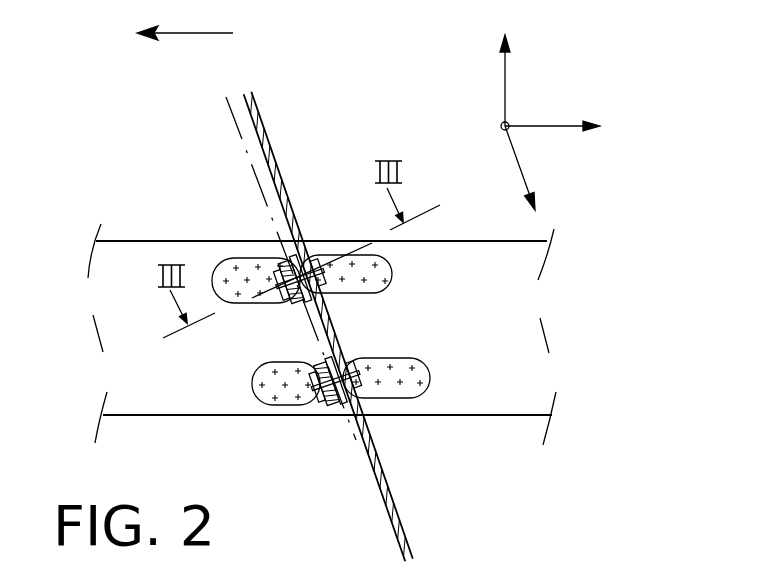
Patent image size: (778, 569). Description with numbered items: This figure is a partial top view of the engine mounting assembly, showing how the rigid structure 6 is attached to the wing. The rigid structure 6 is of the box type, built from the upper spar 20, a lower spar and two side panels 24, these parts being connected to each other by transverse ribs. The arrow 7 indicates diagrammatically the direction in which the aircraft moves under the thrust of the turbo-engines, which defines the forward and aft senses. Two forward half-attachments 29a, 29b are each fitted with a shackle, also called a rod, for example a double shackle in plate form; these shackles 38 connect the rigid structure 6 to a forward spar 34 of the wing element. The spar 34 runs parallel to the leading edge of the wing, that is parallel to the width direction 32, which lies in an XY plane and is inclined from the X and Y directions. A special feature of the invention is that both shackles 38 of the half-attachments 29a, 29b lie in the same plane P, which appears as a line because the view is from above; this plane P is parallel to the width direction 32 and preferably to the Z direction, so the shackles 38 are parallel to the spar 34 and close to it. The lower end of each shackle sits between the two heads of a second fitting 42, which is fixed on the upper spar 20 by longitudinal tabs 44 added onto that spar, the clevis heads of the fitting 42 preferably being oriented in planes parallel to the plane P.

The rigid structure 6 is at (524, 291).
The arrow 7 is at (188, 33).
The upper spar 20 is at (354, 345).
The side panels 24 is at (452, 241).
The forward half-attachment 29a is at (320, 282).
The forward half-attachment 29b is at (289, 419).
The width direction 32 is at (520, 164).
The forward spar 34 is at (266, 134).
The shackles 38 is at (298, 300).
The second fitting 42 is at (365, 300).
The longitudinal tabs 44 is at (238, 258).
The plane P is at (237, 130).